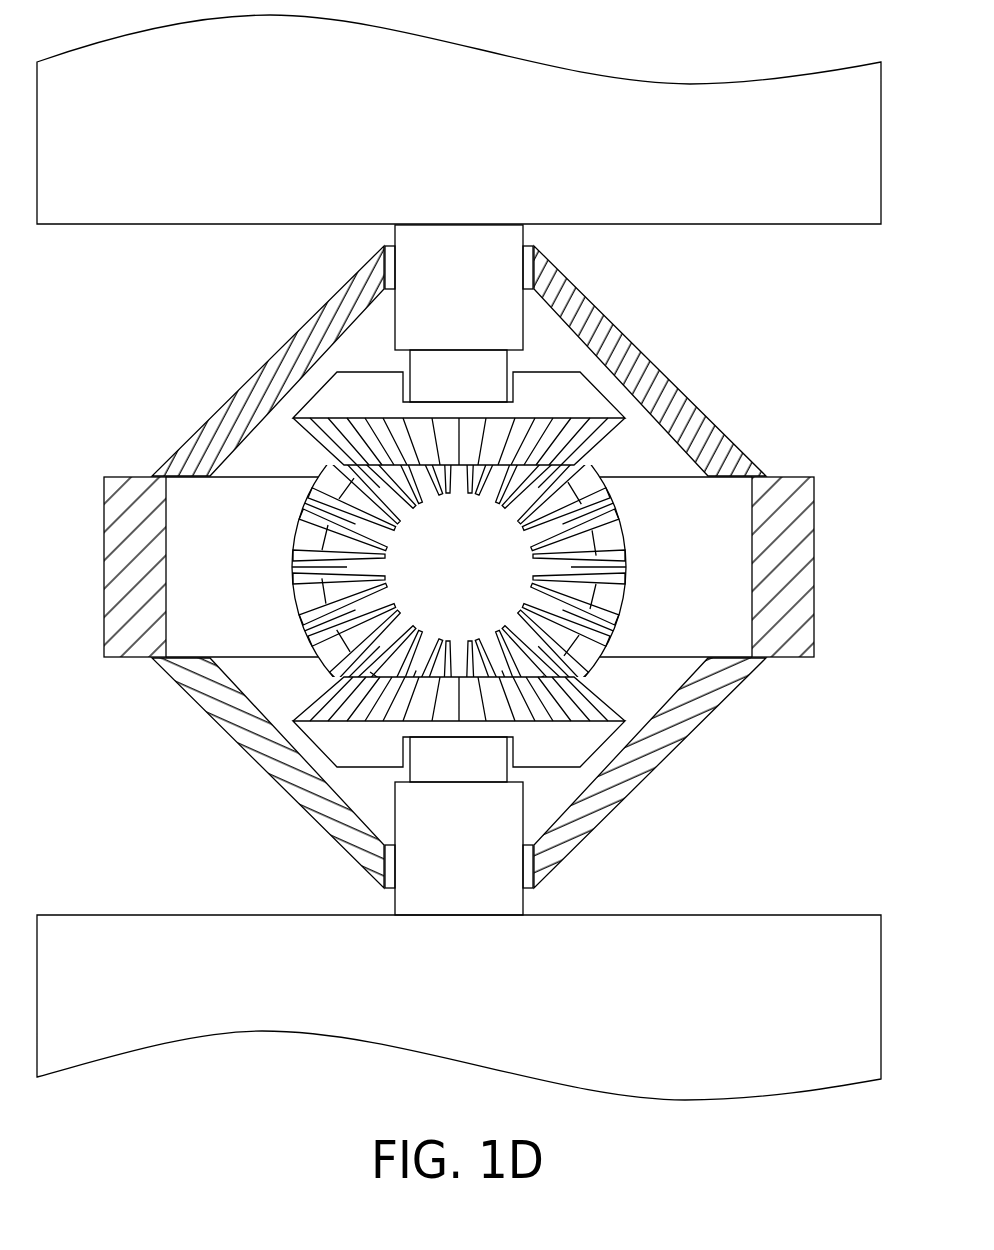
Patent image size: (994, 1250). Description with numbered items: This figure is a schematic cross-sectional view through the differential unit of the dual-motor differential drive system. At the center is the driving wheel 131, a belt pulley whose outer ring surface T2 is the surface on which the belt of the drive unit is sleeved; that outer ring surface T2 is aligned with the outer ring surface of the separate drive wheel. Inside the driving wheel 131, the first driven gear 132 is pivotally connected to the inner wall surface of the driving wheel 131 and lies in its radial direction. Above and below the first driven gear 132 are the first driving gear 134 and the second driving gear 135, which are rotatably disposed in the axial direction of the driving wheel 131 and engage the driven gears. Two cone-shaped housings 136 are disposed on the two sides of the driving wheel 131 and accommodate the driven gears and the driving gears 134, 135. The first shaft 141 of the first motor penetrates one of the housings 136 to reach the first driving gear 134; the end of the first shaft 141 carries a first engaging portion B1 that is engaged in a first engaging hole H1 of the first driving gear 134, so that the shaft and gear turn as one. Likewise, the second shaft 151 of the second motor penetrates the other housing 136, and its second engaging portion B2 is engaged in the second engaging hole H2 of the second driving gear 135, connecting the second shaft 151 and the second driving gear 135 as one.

The driving wheel 131 is at (802, 507).
The first driven gear 132 is at (497, 572).
The first driving gear 134 is at (345, 743).
The second driving gear 135 is at (577, 400).
The housing 136 is at (712, 442).
The first shaft 141 is at (427, 887).
The second shaft 151 is at (490, 273).
The first engaging portion B1 is at (443, 767).
The second engaging portion B2 is at (487, 369).
The first engaging hole H1 is at (510, 750).
The second engaging hole H2 is at (408, 373).
The outer ring surface T2 is at (814, 560).